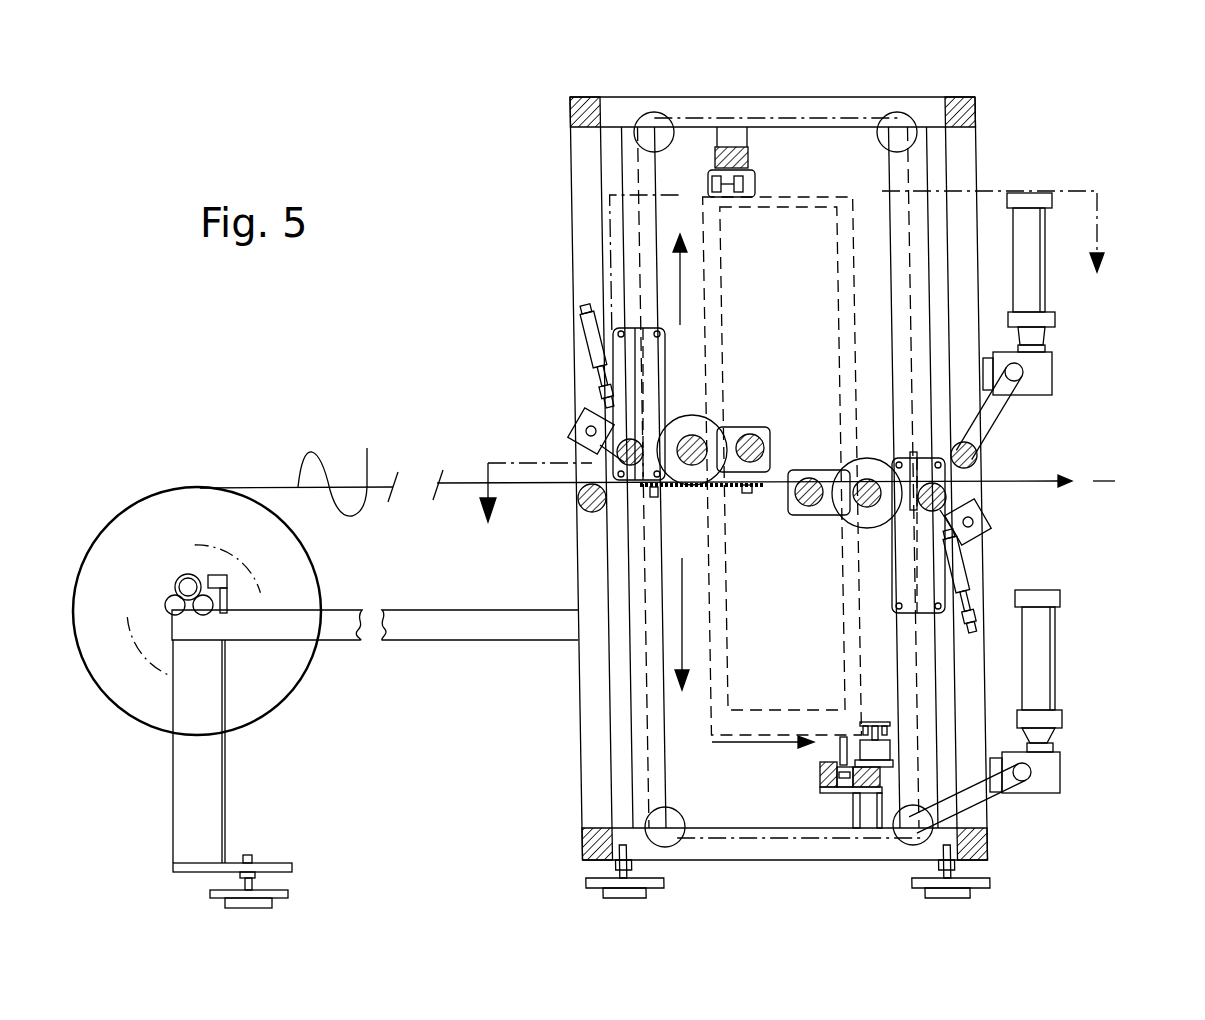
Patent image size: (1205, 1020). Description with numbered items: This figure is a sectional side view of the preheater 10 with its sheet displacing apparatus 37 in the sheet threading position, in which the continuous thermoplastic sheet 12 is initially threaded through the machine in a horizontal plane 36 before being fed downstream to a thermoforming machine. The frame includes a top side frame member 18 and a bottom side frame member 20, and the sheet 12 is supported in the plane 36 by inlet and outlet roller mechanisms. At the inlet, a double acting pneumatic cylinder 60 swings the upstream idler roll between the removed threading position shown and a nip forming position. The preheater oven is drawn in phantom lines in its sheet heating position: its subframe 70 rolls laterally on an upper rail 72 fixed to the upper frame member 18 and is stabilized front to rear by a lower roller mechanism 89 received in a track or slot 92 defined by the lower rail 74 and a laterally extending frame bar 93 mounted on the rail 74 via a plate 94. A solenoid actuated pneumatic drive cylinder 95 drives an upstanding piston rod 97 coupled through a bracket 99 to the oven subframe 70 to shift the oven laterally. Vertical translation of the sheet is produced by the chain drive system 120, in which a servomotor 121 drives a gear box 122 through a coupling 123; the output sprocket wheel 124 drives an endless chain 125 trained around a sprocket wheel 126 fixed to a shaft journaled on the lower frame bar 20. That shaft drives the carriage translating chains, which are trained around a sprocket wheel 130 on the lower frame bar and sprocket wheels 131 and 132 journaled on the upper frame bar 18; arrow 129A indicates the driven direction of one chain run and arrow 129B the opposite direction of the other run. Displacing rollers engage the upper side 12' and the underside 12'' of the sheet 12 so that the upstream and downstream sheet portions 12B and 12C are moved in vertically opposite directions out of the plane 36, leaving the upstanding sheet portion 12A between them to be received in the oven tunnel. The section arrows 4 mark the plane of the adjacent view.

The section line of FIG. 4 is at (792, 373).
The preheater 10 is at (1012, 147).
The thermoplastic sheet 12 is at (629, 462).
The upper side of the sheet 12' is at (342, 535).
The underside of the sheet 12'' is at (344, 460).
The upstanding vertical sheet portion 12A is at (778, 470).
The upstream sheet portion 12B is at (727, 487).
The downstream sheet portion 12C is at (822, 445).
The top side frame member 18 is at (765, 95).
The bottom side frame member 20 is at (707, 860).
The horizontal plane 36 is at (1108, 481).
The sheet displacing apparatus 37 is at (555, 558).
The double acting pneumatically operated cylinder 60 is at (540, 393).
The oven subframe 70 is at (801, 741).
The upper laterally extending rail 72 is at (750, 160).
The lower laterally extending rail 74 is at (850, 790).
The lower roller mechanism 89 is at (746, 744).
The track or slot 92 is at (837, 800).
The laterally extending frame bar 93 is at (822, 773).
The plate 94 is at (863, 795).
The pneumatic drive cylinder 95 is at (855, 793).
The upstanding piston rod 97 is at (862, 728).
The bracket 99 is at (877, 720).
The chain drive system 120 is at (1052, 757).
The servomotor 121 is at (1038, 650).
The gear box 122 is at (1060, 780).
The coupling 123 is at (1060, 713).
The output sprocket wheel 124 is at (1022, 772).
The endless chain 125 is at (997, 800).
The sprocket wheel 126 is at (918, 830).
The arrow 129A is at (682, 280).
The second carriage belt 129B is at (682, 618).
The sprocket wheel 130 is at (662, 823).
The sprocket wheel 131 is at (650, 130).
The sprocket wheel 132 is at (893, 128).